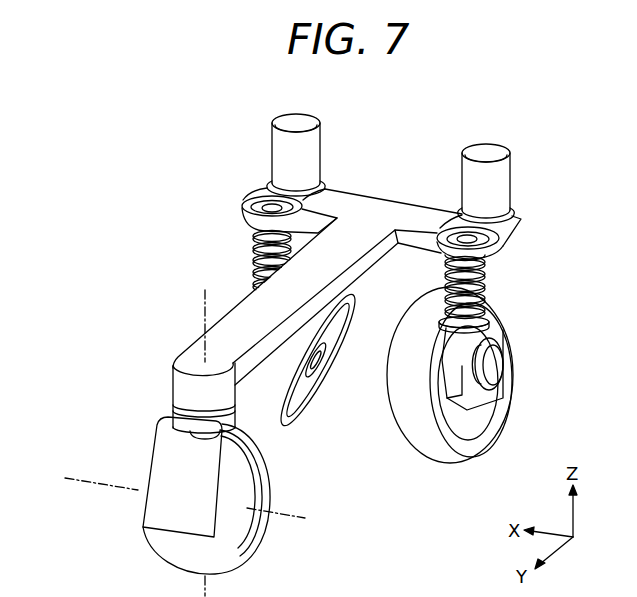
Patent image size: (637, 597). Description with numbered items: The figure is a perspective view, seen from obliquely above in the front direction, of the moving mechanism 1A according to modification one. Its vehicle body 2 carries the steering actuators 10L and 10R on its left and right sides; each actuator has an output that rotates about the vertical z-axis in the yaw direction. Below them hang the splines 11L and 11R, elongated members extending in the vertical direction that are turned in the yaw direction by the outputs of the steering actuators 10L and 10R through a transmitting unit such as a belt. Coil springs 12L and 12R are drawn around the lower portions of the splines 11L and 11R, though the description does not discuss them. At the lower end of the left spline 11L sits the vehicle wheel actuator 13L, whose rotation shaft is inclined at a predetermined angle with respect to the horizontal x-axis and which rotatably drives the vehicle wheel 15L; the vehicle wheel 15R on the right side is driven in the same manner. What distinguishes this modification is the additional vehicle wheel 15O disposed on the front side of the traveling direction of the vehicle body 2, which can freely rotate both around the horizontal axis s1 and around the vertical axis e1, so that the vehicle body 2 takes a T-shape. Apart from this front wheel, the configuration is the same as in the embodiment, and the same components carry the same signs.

The moving mechanism 1A is at (114, 190).
The vehicle body 2 is at (389, 199).
The steering actuator 10R is at (272, 156).
The steering actuator 10L is at (508, 190).
The spline 11R is at (273, 208).
The spline 11L is at (497, 236).
The right coil spring 12R is at (255, 266).
The left coil spring 12L is at (487, 291).
The vehicle wheel actuator 13L is at (502, 363).
The vehicle wheel 15R is at (307, 390).
The vehicle wheel 15L is at (503, 430).
The vehicle wheel 15O is at (185, 550).
The vertical axis e1 is at (201, 323).
The horizontal axis s1 is at (105, 482).